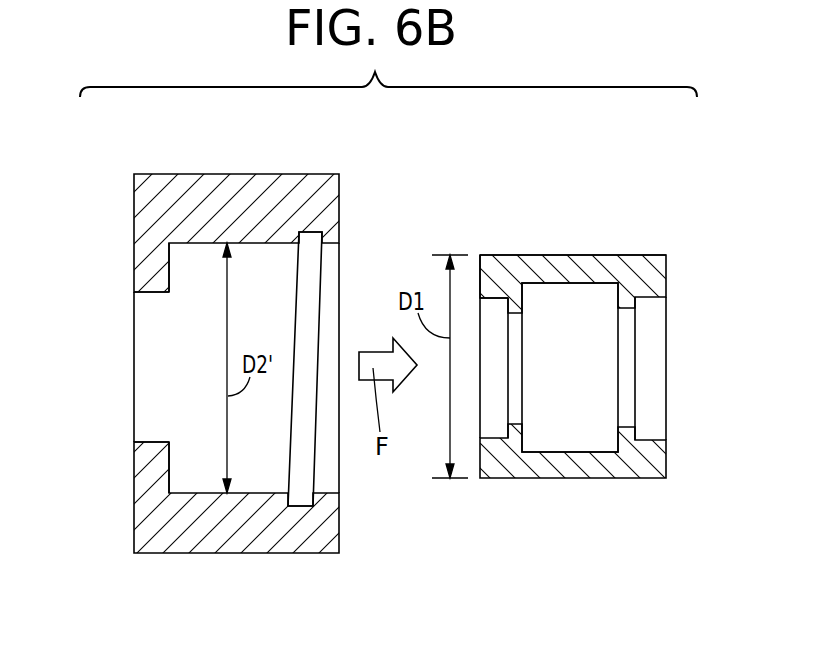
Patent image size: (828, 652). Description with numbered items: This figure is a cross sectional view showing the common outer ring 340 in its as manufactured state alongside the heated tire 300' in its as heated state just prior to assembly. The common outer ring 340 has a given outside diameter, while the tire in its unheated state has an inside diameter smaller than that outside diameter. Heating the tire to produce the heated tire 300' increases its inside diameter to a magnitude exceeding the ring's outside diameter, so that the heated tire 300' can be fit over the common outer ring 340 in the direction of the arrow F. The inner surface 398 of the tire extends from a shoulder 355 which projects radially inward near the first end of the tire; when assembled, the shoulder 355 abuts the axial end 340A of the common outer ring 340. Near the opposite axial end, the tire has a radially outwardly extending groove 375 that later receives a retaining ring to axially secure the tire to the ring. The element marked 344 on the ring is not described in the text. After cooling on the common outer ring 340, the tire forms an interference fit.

The heated tire 300' is at (364, 337).
The shoulder 355 is at (155, 277).
The inner surface 398 is at (193, 490).
The groove 375 is at (308, 232).
The common outer ring 340 is at (503, 270).
The axial end 340A is at (480, 274).
The outer surface of bearing 344 is at (582, 255).